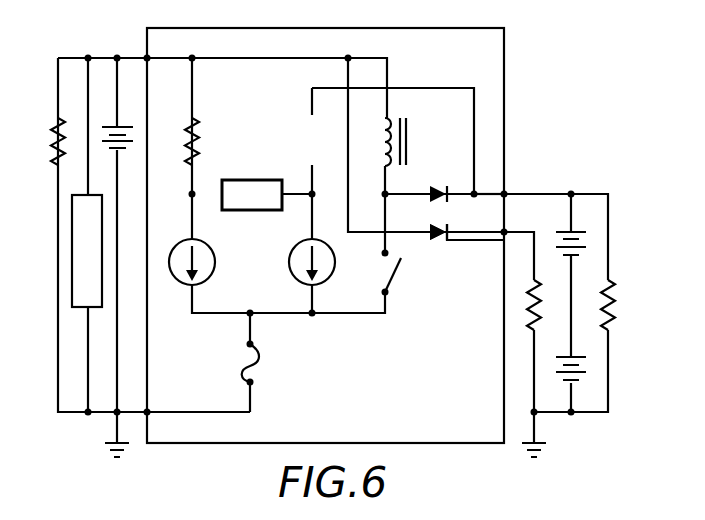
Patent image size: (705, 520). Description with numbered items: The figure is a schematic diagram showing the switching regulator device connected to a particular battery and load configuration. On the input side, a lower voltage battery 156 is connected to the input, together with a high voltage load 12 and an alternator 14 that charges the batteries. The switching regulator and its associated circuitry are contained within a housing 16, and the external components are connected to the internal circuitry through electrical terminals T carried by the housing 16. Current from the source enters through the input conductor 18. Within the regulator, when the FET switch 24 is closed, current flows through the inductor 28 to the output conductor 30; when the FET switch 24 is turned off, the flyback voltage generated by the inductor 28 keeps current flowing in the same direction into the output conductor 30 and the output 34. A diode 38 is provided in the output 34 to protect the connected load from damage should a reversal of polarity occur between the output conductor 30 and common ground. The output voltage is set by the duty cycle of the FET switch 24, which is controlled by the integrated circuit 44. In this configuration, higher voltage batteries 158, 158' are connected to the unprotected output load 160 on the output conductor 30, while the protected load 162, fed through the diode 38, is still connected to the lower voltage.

The high voltage load 12 is at (48, 141).
The alternator 14 is at (73, 278).
The housing 16 is at (504, 78).
The input conductor 18 is at (175, 60).
The FET switch 24 is at (393, 281).
The inductor 28 is at (440, 128).
The output conductor 30 is at (488, 192).
The output 34 is at (492, 237).
The diode 38 is at (440, 240).
The integrated circuit 44 is at (275, 178).
The lower voltage battery 156 is at (108, 127).
The higher voltage battery 158 is at (606, 228).
The higher voltage battery 158' is at (611, 380).
The unprotected output load 160 is at (618, 316).
The protected load 162 is at (530, 305).